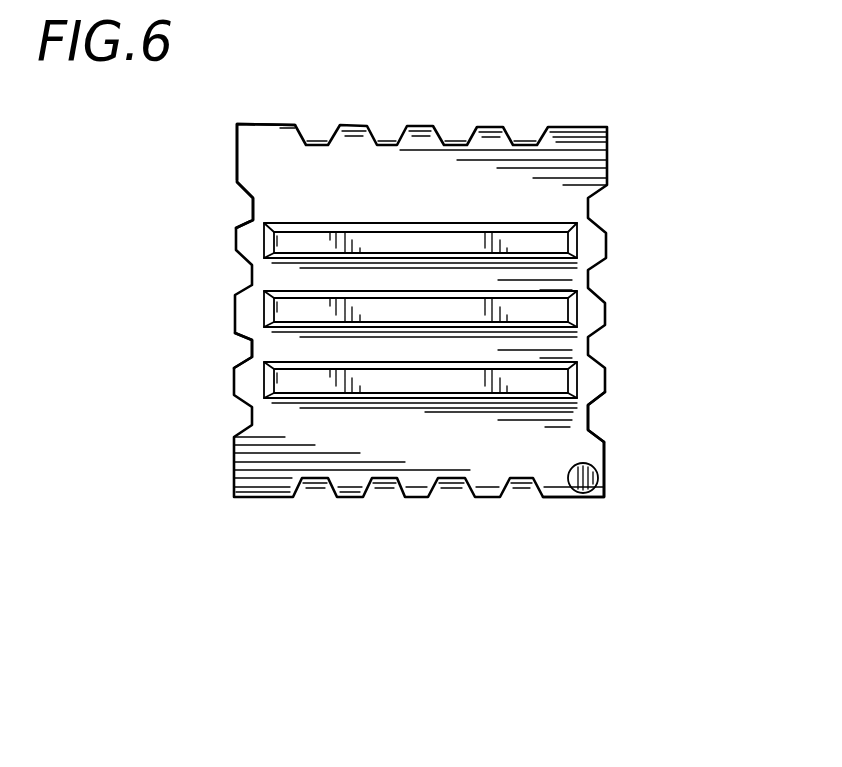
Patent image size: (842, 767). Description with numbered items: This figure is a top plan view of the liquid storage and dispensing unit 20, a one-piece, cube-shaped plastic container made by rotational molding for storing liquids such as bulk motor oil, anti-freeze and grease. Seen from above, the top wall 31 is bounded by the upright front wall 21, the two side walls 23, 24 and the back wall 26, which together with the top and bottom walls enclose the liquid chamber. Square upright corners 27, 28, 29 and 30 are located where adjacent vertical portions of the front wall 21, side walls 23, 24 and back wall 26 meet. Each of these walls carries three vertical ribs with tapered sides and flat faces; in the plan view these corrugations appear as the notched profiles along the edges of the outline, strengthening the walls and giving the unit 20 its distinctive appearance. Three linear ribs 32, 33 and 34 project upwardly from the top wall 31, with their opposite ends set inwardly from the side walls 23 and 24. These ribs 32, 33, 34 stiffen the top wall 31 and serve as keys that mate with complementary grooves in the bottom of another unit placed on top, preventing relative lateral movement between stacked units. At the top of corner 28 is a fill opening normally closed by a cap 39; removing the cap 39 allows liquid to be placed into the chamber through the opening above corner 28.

The liquid storage and dispensing unit 20 is at (641, 90).
The front wall 21 is at (425, 500).
The side wall 23 is at (253, 340).
The side wall 24 is at (588, 427).
The back wall 26 is at (488, 125).
The corner 27 is at (234, 470).
The corner 28 is at (604, 457).
The corner 29 is at (608, 153).
The corner 30 is at (237, 143).
The top wall 31 is at (288, 183).
The linear rib 32 is at (548, 382).
The linear rib 33 is at (552, 313).
The linear rib 34 is at (552, 242).
The cap 39 is at (568, 499).